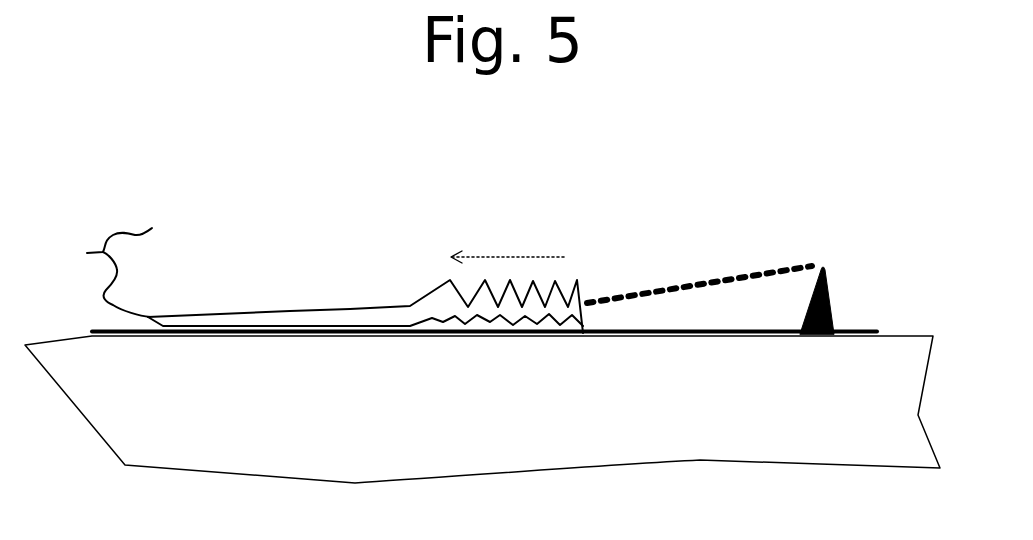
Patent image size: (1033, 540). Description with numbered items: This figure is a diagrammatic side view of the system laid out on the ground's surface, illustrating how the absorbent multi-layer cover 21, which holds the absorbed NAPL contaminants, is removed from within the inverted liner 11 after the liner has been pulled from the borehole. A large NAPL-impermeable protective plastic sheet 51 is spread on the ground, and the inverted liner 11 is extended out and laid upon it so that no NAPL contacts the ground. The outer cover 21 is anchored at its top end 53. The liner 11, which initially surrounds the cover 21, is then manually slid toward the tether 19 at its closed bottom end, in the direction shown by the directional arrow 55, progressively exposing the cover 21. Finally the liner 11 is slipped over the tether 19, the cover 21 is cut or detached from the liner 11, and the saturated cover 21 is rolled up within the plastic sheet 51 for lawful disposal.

The inverted liner 11 is at (290, 310).
The tether 19 is at (152, 228).
The multi-layer cover 21 is at (707, 282).
The protective plastic sheet 51 is at (858, 331).
The top end of the cover 53 is at (823, 267).
The directional arrow 55 is at (532, 256).